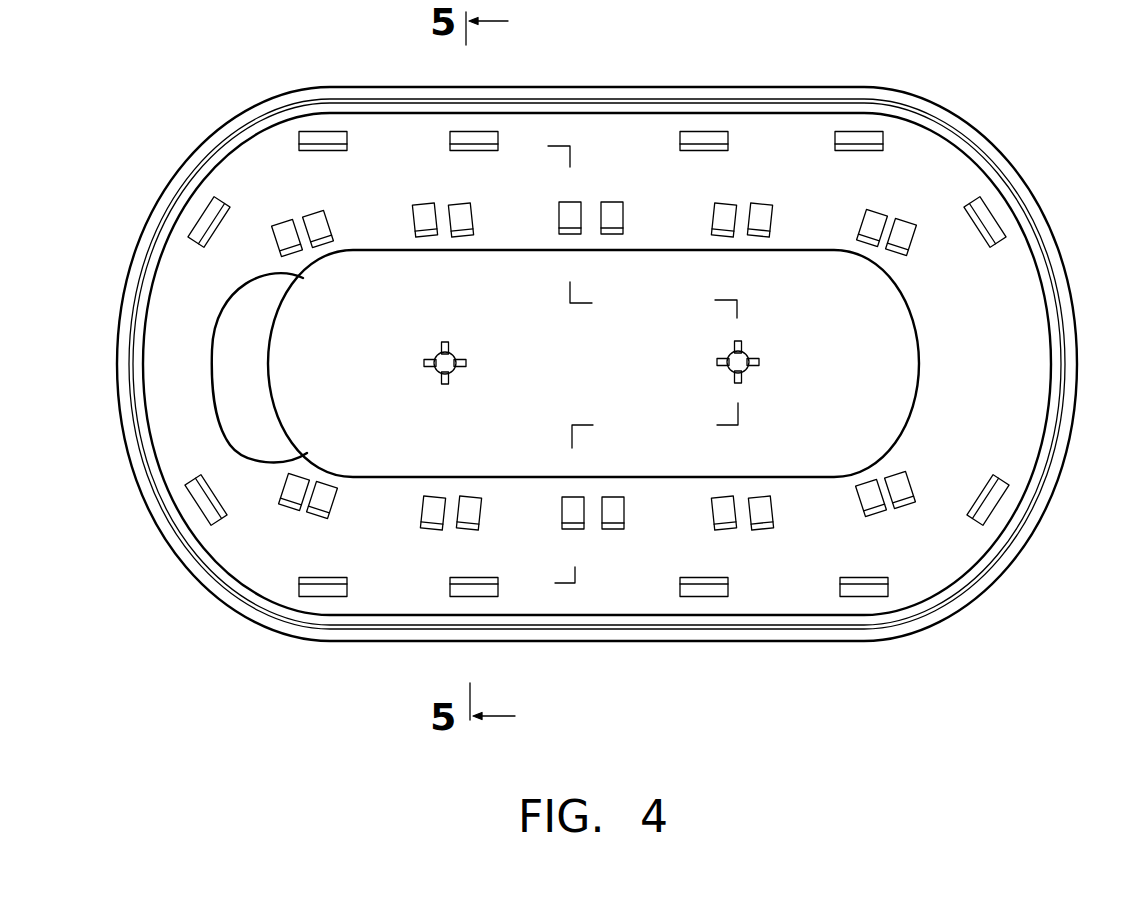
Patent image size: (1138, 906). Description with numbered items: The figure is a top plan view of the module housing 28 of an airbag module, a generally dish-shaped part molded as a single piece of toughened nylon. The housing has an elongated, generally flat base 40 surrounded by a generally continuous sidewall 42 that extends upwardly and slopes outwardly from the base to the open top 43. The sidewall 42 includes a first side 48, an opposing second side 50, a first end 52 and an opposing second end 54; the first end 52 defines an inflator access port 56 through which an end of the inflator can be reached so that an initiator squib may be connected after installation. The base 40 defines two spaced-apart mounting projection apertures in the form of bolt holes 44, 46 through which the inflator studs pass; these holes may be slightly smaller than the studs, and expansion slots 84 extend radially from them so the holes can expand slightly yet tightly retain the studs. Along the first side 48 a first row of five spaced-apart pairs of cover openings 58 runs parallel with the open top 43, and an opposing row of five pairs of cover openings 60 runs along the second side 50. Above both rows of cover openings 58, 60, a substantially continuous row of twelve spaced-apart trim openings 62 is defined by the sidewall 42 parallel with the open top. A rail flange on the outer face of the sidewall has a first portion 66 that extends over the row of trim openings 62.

The module housing 28 is at (627, 347).
The base 40 is at (845, 356).
The sidewall 42 is at (1079, 314).
The open top 43 is at (1046, 311).
The bolt hole 44 is at (458, 375).
The bolt hole 46 is at (750, 372).
The first side 48 is at (618, 161).
The second side 50 is at (623, 596).
The first end 52 is at (191, 391).
The second end 54 is at (990, 411).
The inflator access port 56 is at (213, 362).
The cover openings 58 is at (290, 222).
The cover openings 60 is at (296, 508).
The trim openings 62 is at (322, 132).
The first portion 66 is at (974, 588).
The expansion slots 84 is at (462, 357).